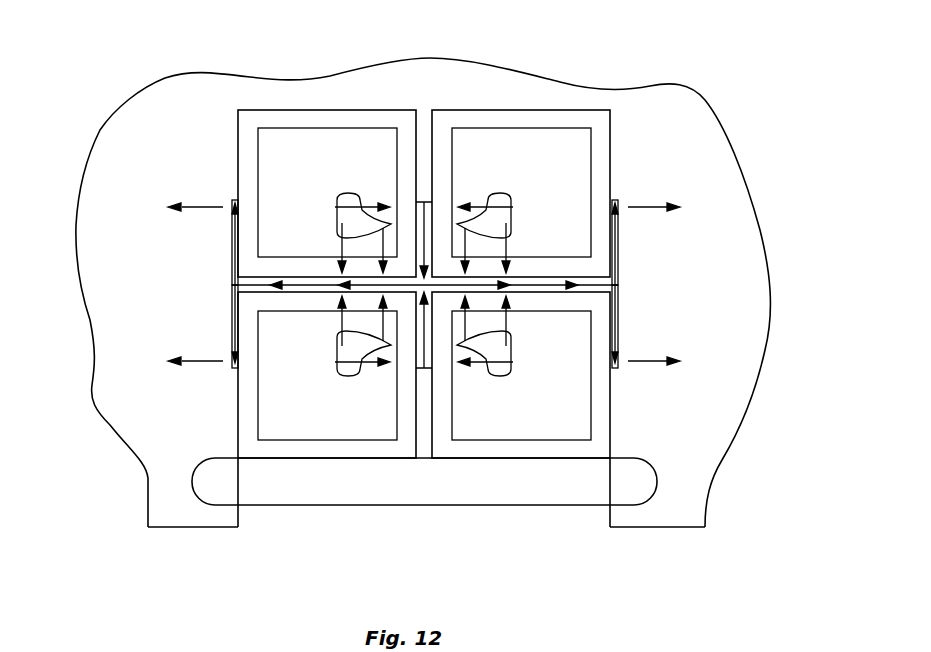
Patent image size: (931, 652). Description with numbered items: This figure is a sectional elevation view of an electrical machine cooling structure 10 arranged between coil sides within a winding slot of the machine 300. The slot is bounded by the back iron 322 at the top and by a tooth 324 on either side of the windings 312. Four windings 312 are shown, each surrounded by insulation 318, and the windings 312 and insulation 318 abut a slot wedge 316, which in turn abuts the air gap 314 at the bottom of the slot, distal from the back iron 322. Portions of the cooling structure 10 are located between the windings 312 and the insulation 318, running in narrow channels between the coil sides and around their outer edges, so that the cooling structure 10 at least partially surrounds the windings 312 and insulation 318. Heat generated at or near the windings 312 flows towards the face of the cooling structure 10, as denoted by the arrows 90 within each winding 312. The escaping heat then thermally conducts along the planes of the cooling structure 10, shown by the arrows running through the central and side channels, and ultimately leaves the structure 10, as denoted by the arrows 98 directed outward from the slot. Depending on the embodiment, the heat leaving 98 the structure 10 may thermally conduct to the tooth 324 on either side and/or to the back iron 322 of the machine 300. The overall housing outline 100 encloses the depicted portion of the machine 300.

The machine 300 is at (126, 88).
The test apparatus housing 100 is at (113, 127).
The insulation 318 is at (247, 120).
The windings 312 is at (424, 284).
The heat flow towards the cooling structure 90 is at (348, 193).
The heat leaving the cooling structure 98 is at (200, 207).
The cooling structure 10 is at (645, 277).
The back iron 322 is at (461, 81).
The tooth 324 is at (431, 305).
The slot wedge 316 is at (424, 481).
The air gap 314 is at (424, 500).